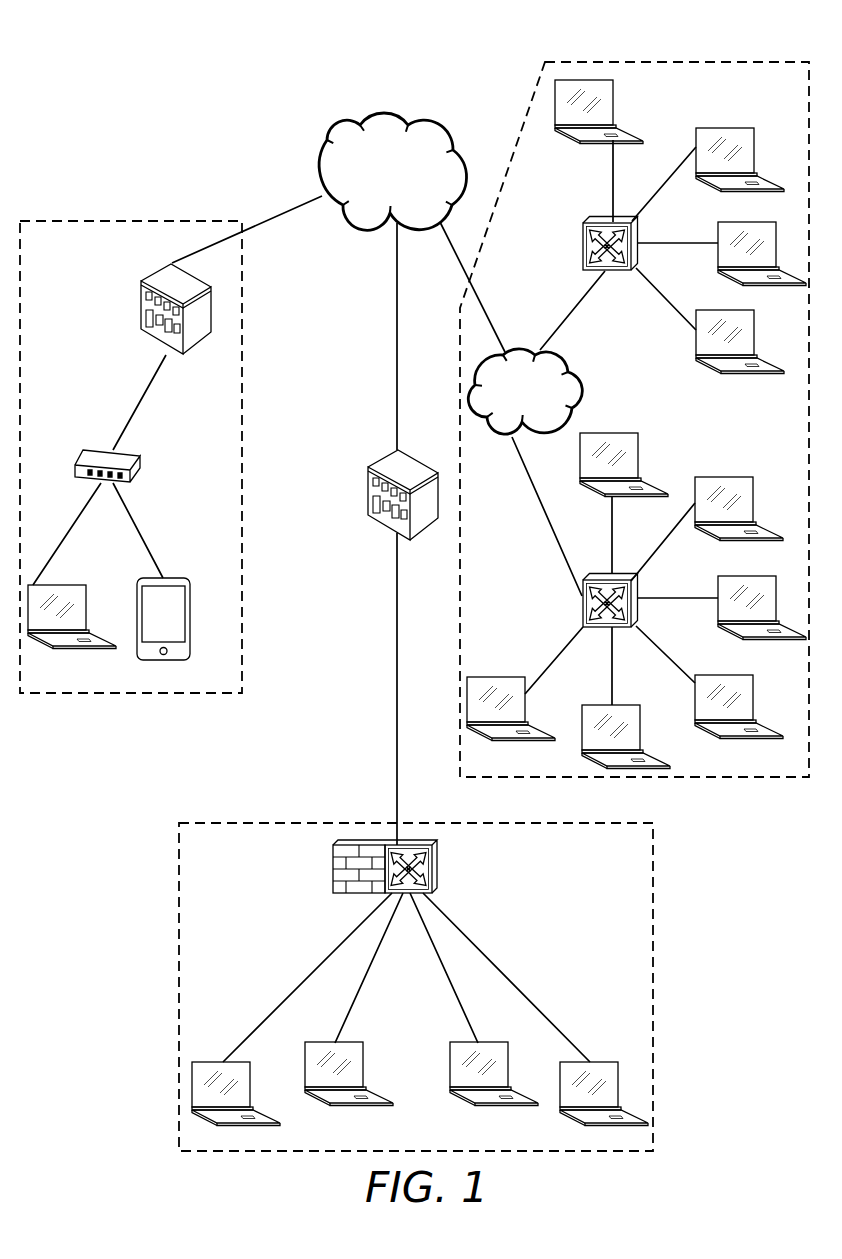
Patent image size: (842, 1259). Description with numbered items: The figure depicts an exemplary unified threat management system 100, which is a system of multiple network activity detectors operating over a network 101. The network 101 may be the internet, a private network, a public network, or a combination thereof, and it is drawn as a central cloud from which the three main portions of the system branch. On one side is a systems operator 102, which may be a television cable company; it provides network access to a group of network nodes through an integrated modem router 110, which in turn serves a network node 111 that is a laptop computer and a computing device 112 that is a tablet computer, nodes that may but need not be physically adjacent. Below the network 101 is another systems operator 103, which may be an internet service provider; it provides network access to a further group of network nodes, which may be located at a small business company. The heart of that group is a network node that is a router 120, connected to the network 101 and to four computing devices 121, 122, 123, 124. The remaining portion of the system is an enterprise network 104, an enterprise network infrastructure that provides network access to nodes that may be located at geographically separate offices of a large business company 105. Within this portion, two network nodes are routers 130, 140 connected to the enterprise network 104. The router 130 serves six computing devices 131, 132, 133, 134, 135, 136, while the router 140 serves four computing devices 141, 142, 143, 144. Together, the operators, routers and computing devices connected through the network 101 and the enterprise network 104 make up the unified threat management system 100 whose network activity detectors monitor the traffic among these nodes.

The system 100 is at (93, 42).
The network 101 is at (338, 133).
The systems operator 102 is at (154, 275).
The systems operator 103 is at (382, 460).
The enterprise network 104 is at (560, 353).
The large business company 105 is at (760, 62).
The integrated modem router 110 is at (93, 452).
The network node 111 is at (70, 584).
The computing device 112 is at (163, 578).
The router 120 is at (438, 866).
The computing device 121 is at (209, 1061).
The computing device 122 is at (320, 1041).
The computing device 123 is at (494, 1041).
The computing device 124 is at (604, 1061).
The router 130 is at (604, 573).
The computing device 131 is at (518, 676).
The computing device 132 is at (626, 705).
The computing device 133 is at (735, 675).
The computing device 134 is at (742, 576).
The computing device 135 is at (738, 477).
The computing device 136 is at (628, 433).
The router 140 is at (596, 220).
The computing device 141 is at (754, 333).
The computing device 142 is at (735, 221).
The computing device 143 is at (711, 127).
The computing device 144 is at (615, 86).